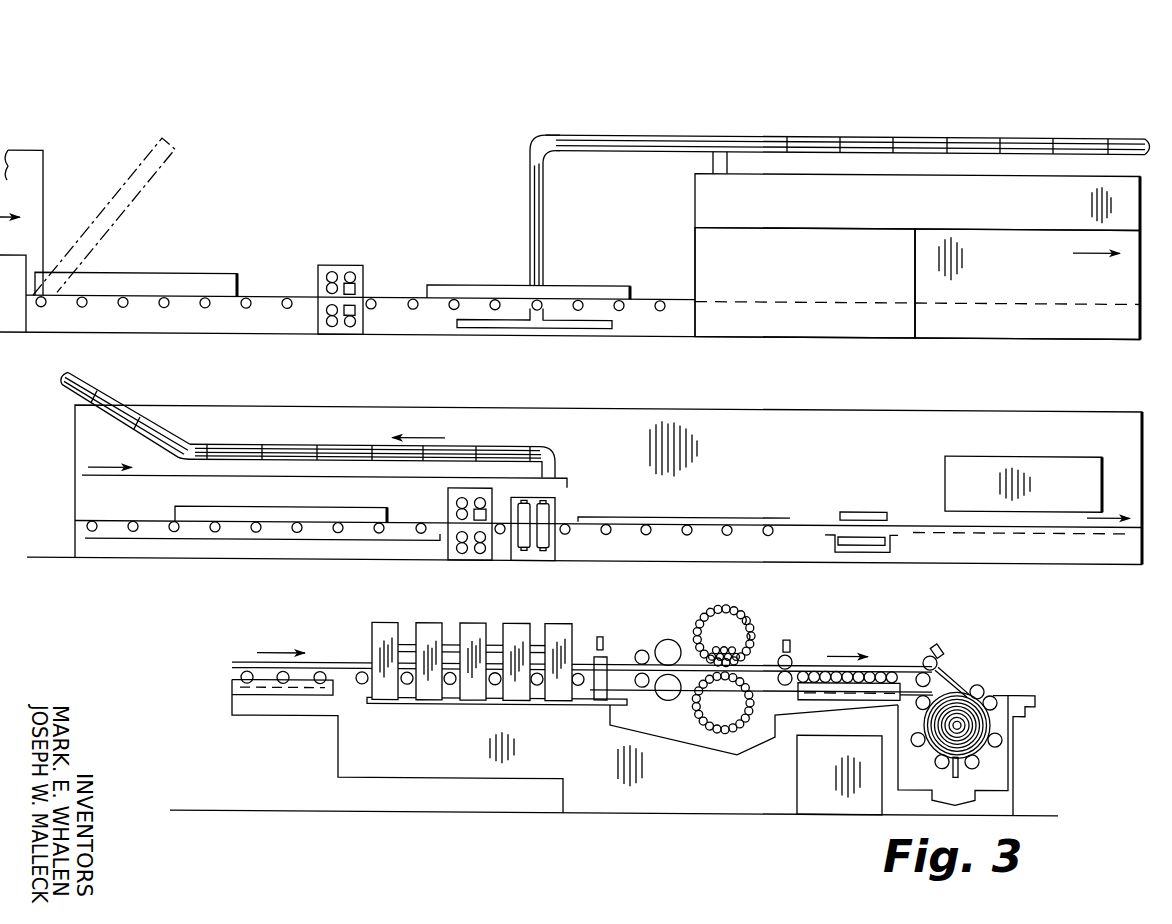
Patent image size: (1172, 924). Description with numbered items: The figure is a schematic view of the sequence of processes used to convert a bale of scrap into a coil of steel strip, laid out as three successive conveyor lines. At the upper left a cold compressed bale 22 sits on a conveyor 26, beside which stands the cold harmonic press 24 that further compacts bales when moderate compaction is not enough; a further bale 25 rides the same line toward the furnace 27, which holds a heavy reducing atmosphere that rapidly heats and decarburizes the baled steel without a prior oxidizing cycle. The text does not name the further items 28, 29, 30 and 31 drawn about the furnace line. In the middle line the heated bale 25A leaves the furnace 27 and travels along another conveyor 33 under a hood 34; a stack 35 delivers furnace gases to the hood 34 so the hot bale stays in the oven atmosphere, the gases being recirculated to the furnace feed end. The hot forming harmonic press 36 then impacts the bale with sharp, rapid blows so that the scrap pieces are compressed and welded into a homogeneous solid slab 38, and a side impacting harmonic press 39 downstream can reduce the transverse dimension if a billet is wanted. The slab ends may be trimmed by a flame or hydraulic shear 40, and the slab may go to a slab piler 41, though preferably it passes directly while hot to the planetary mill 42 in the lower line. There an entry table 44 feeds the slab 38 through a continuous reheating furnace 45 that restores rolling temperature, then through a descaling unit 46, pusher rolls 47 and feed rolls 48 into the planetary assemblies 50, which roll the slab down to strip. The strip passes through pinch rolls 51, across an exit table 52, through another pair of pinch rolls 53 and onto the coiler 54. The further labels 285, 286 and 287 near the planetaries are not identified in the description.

The cold compressed bale 22 is at (165, 277).
The cold harmonic press 24 is at (336, 337).
The conveyor table 25 is at (545, 288).
The heated bale 25A is at (245, 514).
The conveyor 26 is at (653, 307).
The furnace 27 is at (820, 336).
The support bracket 28 is at (533, 325).
The duct riser 29 is at (607, 142).
The first furnace section 30 is at (813, 278).
The second furnace section 31 is at (1013, 277).
The conveyor 33 is at (94, 531).
The hood 34 is at (150, 471).
The stack 35 is at (1023, 146).
The hot forming harmonic press 36 is at (473, 558).
The slab 38 is at (686, 514).
The side impacting harmonic press 39 is at (531, 559).
The hydraulic shear 40 is at (865, 485).
The slab piler 41 is at (1030, 444).
The planetary mill 42 is at (306, 740).
The entry table 44 is at (226, 685).
The continuous reheating furnace 45 is at (490, 703).
The descaling unit 46 is at (604, 652).
The pusher rolls 47 is at (650, 645).
The feed rolls 48 is at (678, 636).
The planetary assemblies 50 is at (750, 606).
The pinch rolls 51 is at (791, 650).
The exit table 52 is at (868, 668).
The pinch rolls 53 is at (940, 659).
The coiler 54 is at (990, 685).
The bead 285 is at (732, 614).
The bead pile 286 is at (717, 646).
The bead 287 is at (753, 630).